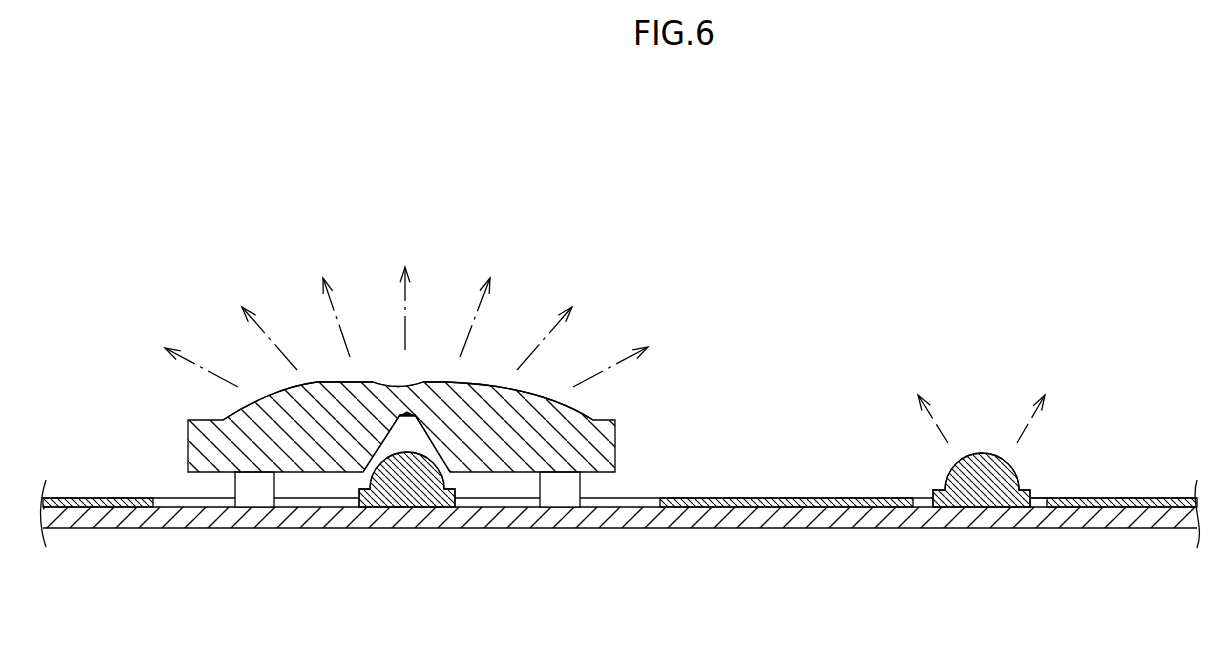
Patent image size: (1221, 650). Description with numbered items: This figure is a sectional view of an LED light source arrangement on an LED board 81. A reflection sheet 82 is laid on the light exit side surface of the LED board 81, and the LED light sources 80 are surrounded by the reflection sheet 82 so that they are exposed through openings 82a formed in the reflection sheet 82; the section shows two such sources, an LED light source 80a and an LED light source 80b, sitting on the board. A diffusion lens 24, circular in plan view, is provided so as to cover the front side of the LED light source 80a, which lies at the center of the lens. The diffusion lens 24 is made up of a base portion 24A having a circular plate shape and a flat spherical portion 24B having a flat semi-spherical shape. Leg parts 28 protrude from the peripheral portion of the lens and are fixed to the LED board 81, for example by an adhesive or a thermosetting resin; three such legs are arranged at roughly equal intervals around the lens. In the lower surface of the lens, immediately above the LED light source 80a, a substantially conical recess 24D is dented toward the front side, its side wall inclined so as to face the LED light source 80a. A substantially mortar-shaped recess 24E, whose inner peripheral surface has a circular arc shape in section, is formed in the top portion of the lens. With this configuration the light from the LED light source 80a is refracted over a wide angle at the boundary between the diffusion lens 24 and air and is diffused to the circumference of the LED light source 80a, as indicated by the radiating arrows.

The diffusion lens 24 is at (490, 398).
The base portion 24A is at (598, 448).
The flat spherical portion 24B is at (562, 409).
The recess (light entrance side recess) 24D is at (432, 446).
The recess (light exit side recess) 24E is at (394, 388).
The leg part 28 is at (259, 490).
The LED light source 80 is at (699, 525).
The LED light source 80a is at (405, 488).
The second light emitting element 80b is at (981, 489).
The LED board 81 is at (1092, 522).
The reflection sheet 82 is at (1143, 498).
The opening 82a is at (1043, 500).